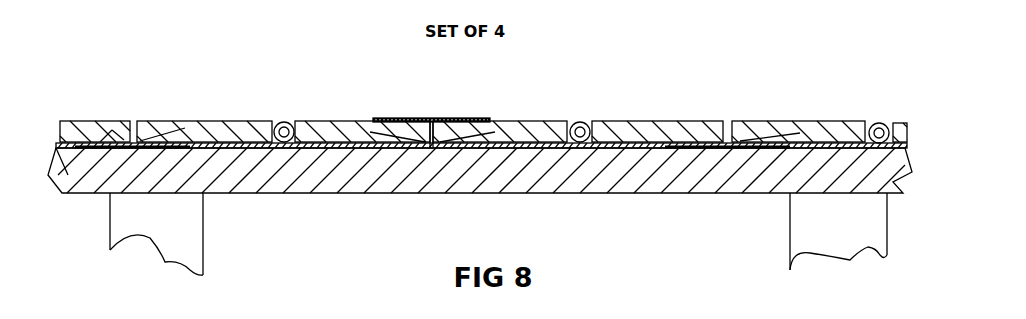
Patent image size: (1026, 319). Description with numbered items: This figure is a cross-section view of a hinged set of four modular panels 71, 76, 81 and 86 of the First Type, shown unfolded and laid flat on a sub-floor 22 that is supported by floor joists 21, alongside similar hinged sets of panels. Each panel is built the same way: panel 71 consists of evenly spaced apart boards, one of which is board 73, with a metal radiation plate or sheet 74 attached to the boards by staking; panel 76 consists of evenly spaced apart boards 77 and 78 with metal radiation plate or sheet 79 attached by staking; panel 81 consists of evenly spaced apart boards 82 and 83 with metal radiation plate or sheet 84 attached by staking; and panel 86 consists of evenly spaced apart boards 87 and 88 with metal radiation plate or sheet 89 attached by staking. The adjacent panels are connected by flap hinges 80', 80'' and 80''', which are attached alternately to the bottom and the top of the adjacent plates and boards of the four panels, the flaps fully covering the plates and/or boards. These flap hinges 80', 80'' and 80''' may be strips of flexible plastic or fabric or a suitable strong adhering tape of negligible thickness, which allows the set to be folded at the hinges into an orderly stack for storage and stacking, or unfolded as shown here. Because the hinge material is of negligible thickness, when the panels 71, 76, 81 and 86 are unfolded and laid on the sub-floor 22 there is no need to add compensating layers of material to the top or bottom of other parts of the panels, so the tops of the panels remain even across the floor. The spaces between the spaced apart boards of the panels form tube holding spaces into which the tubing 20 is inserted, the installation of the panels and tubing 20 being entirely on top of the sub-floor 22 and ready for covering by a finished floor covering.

The tubing 20 is at (283, 121).
The floor joists 21 is at (205, 248).
The sub-floor 22 is at (383, 193).
The modular panel 71 is at (77, 98).
The board 73 is at (107, 122).
The metal radiation plate or sheet 74 is at (60, 150).
The modular panel 76 is at (317, 95).
The board 77 is at (148, 122).
The board 78 is at (337, 121).
The metal radiation plate or sheet 79 is at (240, 147).
The flap hinge 80' is at (132, 191).
The flap hinge 80'' is at (431, 105).
The flap hinge 80''' is at (725, 192).
The modular panel 81 is at (616, 98).
The board 82 is at (508, 121).
The board 83 is at (640, 122).
The metal radiation plate or sheet 84 is at (527, 143).
The modular panel 86 is at (840, 100).
The board 87 is at (763, 122).
The board 88 is at (900, 123).
The metal radiation plate or sheet 89 is at (830, 147).